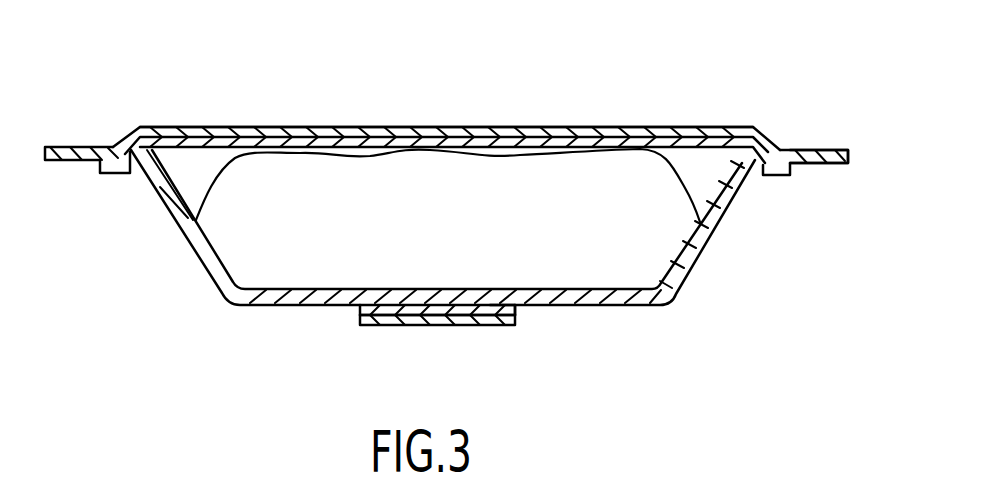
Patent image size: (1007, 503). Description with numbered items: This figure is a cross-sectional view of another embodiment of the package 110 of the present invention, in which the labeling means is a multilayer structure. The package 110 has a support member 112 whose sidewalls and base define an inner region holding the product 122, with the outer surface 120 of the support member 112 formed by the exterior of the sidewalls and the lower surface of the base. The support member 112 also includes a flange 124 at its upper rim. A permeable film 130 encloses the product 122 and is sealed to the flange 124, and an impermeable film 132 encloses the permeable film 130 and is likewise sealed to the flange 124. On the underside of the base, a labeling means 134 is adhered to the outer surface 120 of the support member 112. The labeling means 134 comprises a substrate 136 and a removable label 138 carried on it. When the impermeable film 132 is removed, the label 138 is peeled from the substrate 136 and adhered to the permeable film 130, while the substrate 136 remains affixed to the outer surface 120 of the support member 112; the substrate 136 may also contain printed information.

The package 110 is at (765, 104).
The support member 112 is at (695, 269).
The outer surface 120 is at (208, 275).
The product 122 is at (500, 205).
The flange 124 is at (802, 171).
The permeable film 130 is at (593, 130).
The impermeable film 132 is at (340, 129).
The labeling means 134 is at (512, 330).
The substrate 136 is at (513, 310).
The removable label 138 is at (407, 328).